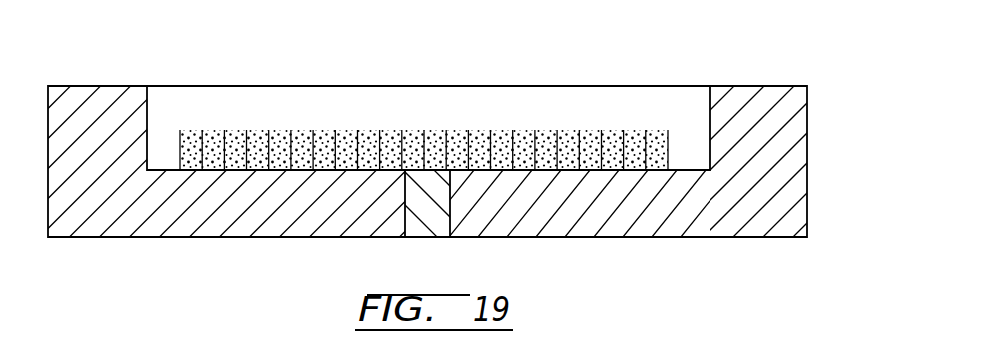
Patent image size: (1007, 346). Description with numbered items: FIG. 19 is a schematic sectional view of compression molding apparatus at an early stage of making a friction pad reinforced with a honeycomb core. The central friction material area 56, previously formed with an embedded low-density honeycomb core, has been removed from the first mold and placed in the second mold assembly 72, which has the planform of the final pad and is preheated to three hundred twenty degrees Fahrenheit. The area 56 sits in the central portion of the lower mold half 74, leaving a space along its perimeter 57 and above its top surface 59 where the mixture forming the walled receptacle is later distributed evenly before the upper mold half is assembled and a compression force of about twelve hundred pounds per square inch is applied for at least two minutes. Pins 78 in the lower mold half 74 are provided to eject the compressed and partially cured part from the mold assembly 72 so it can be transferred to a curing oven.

The second mold assembly 72 is at (767, 63).
The lower mold half 74 is at (797, 157).
The perimeter 57 is at (668, 135).
The friction material area 56 is at (425, 131).
The top surface 59 is at (295, 138).
The pins 78 is at (421, 237).